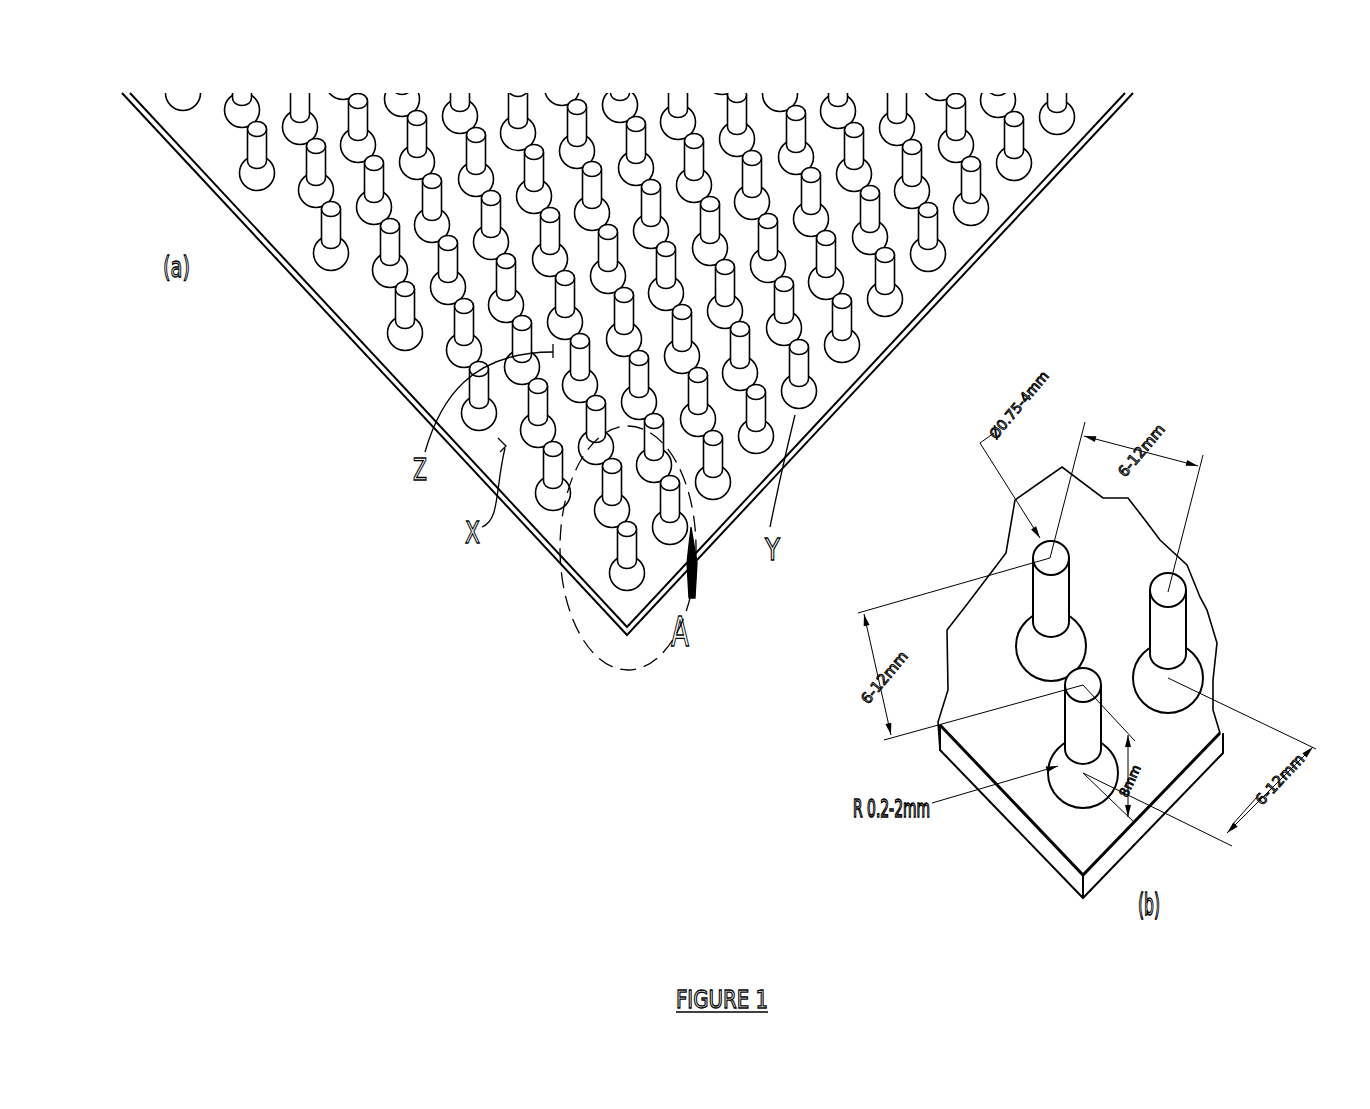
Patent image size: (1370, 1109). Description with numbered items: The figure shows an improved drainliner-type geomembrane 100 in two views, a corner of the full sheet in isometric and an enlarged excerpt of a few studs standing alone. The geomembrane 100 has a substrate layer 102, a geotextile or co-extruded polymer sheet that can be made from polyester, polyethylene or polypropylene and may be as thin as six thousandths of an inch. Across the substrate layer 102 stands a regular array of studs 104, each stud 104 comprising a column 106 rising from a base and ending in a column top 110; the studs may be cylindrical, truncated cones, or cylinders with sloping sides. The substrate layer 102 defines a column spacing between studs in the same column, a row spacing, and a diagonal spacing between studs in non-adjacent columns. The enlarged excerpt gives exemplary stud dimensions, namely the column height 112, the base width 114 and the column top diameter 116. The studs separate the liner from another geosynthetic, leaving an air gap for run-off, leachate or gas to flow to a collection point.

The geomembrane 100 is at (627, 331).
The substrate layer 102 is at (468, 462).
The stud 104 is at (617, 308).
The column 106 is at (410, 335).
The column top 110 is at (256, 128).
The column height 112 is at (1037, 593).
The base width 114 is at (1078, 788).
The column top diameter 116 is at (1178, 593).